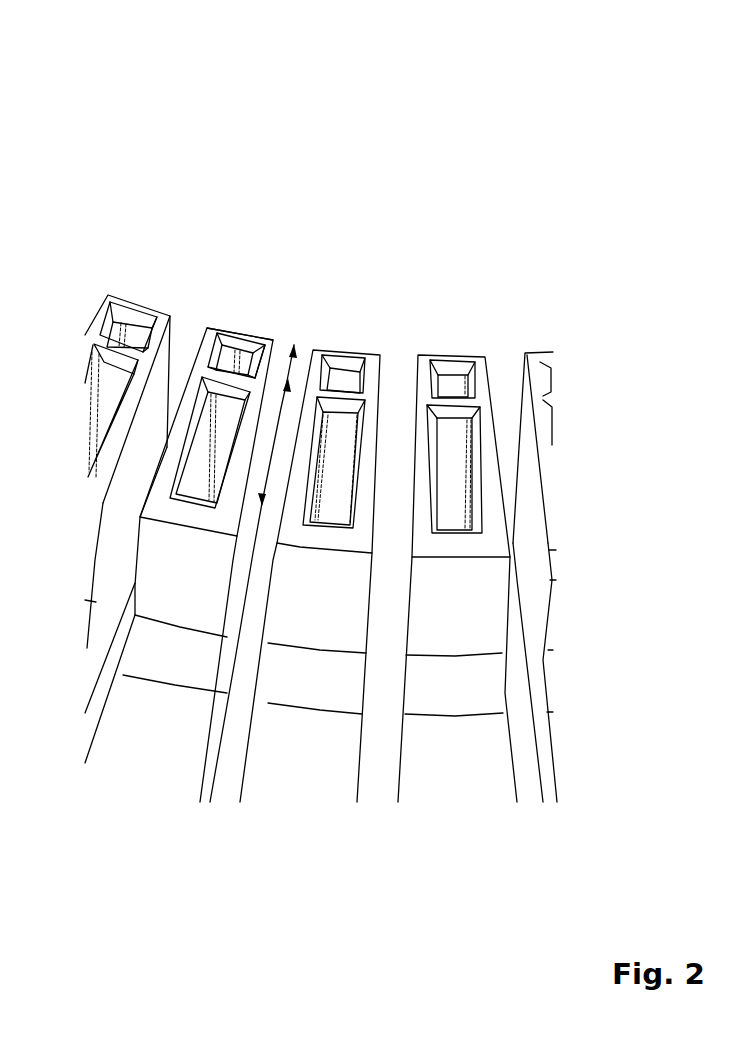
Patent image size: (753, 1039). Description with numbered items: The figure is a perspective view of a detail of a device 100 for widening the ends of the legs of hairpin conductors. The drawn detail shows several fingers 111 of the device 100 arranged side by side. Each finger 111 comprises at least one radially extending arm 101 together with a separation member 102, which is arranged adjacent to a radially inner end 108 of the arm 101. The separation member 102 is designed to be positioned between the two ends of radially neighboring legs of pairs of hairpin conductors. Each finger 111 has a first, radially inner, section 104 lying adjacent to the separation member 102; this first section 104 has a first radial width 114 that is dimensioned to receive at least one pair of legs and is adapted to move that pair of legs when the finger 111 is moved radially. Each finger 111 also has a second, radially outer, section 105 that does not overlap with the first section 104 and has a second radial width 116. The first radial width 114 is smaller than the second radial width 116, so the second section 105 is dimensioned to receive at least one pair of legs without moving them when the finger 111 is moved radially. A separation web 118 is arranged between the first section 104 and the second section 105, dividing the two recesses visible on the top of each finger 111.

The device 100 is at (101, 97).
The arm 101 is at (190, 405).
The separation member 102 is at (233, 330).
The first section 104 is at (253, 330).
The second section 105 is at (212, 444).
The radially inner end 108 is at (197, 312).
The finger 111 is at (163, 737).
The first radial width 114 is at (270, 457).
The second radial width 116 is at (275, 438).
The separation web 118 is at (248, 346).